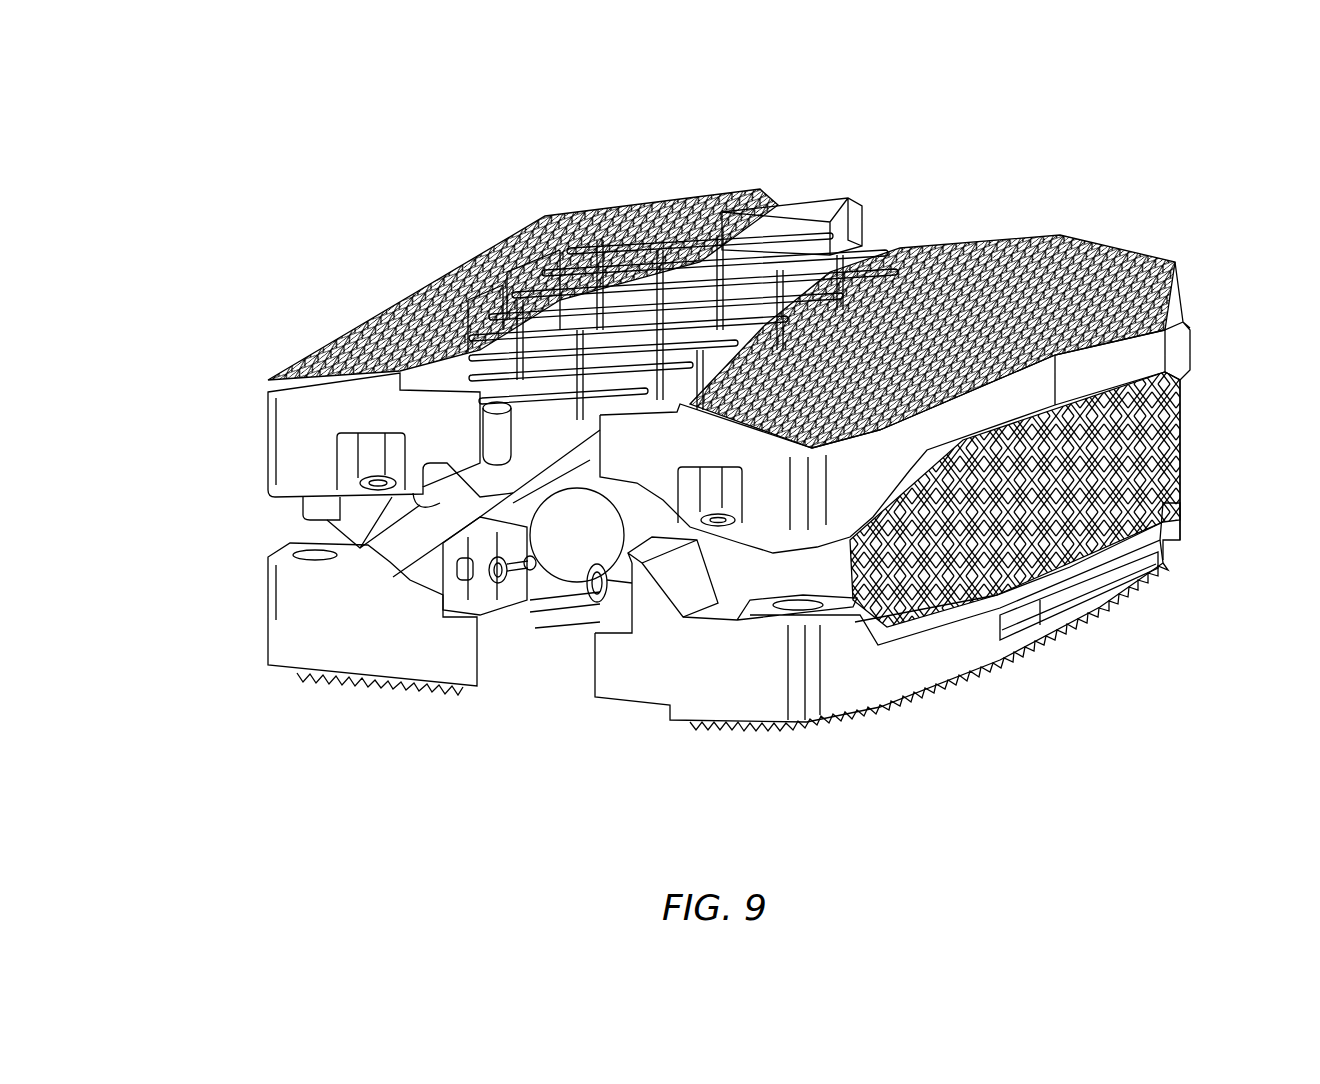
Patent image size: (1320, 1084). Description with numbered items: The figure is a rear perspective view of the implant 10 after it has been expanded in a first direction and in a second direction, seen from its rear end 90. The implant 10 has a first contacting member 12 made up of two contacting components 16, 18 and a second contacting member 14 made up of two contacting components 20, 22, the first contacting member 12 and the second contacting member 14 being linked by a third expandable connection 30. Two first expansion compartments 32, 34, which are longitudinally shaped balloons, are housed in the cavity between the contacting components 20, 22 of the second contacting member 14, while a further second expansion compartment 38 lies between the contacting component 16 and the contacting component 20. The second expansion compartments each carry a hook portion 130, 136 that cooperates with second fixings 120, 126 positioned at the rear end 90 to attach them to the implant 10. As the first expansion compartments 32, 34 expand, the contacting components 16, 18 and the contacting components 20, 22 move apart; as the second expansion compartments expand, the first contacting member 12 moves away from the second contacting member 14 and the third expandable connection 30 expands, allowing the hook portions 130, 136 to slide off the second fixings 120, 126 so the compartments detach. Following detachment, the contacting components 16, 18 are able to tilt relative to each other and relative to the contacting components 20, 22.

The implant 10 is at (700, 422).
The first contacting member 12 is at (700, 355).
The second contacting member 14 is at (700, 548).
The contacting component 16 is at (547, 235).
The contacting component 18 is at (1085, 258).
The contacting component 20 is at (343, 655).
The contacting component 22 is at (1087, 582).
The third expandable connection 30 is at (1112, 432).
The first expansion compartment 32 is at (657, 522).
The first expansion compartment 34 is at (548, 572).
The second expansion compartment 38 is at (555, 444).
The rear end 90 is at (424, 609).
The second fixing 120 is at (378, 447).
The second fixing 126 is at (712, 478).
The hook portion 130 is at (380, 485).
The hook portion 136 is at (692, 522).